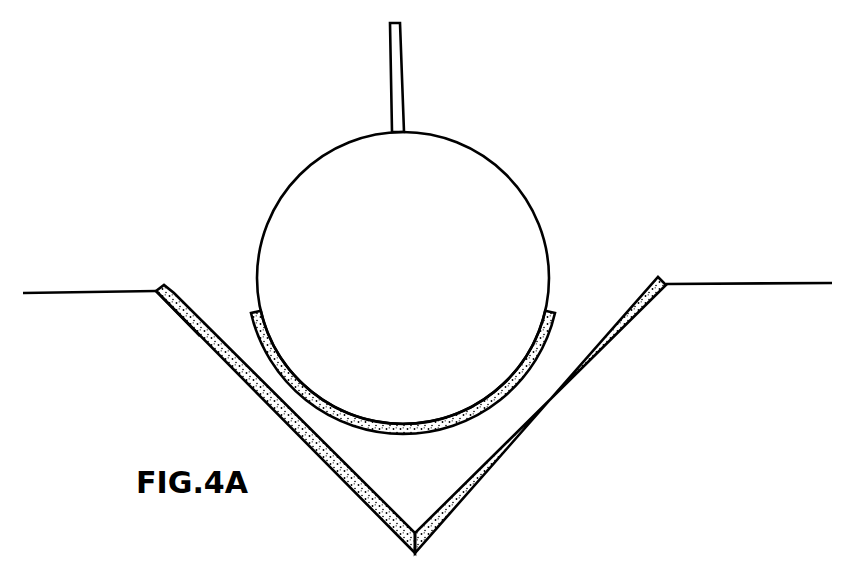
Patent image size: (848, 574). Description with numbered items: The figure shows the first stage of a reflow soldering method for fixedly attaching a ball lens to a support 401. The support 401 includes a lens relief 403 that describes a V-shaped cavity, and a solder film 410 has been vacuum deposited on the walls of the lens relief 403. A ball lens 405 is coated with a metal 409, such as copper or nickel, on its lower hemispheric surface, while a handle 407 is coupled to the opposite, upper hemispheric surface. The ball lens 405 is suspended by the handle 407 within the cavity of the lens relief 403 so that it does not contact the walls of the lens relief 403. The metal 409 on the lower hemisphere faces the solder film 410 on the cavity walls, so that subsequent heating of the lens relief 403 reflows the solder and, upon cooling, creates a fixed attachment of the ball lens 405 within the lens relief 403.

The support 401 is at (725, 284).
The lens relief 403 is at (568, 383).
The ball lens 405 is at (537, 220).
The handle 407 is at (403, 84).
The metal 409 is at (253, 322).
The solder film 410 is at (182, 302).